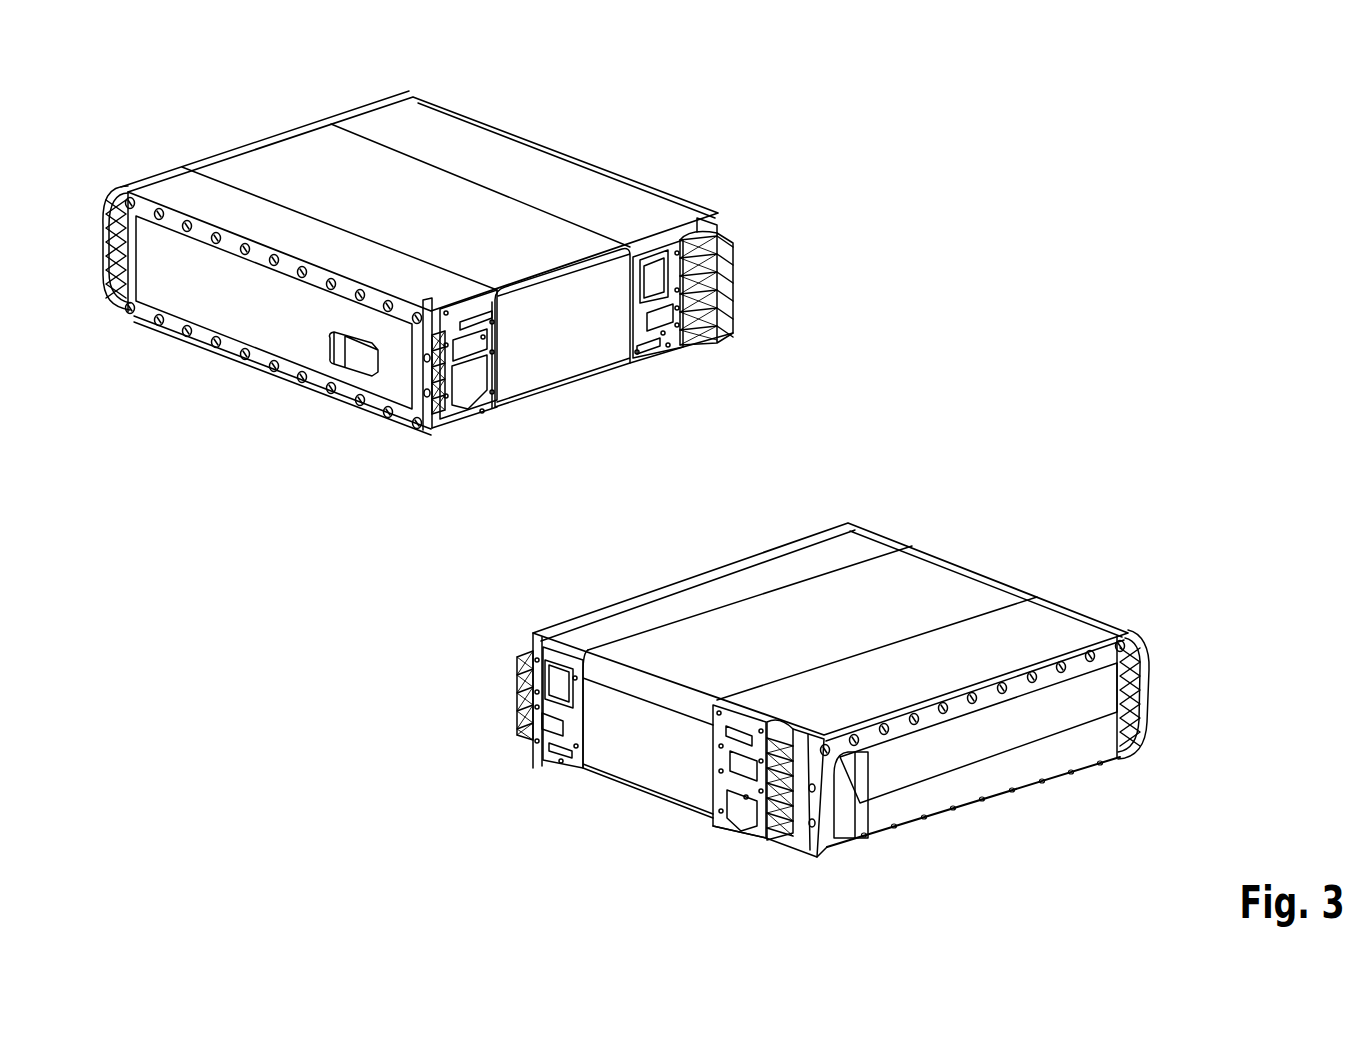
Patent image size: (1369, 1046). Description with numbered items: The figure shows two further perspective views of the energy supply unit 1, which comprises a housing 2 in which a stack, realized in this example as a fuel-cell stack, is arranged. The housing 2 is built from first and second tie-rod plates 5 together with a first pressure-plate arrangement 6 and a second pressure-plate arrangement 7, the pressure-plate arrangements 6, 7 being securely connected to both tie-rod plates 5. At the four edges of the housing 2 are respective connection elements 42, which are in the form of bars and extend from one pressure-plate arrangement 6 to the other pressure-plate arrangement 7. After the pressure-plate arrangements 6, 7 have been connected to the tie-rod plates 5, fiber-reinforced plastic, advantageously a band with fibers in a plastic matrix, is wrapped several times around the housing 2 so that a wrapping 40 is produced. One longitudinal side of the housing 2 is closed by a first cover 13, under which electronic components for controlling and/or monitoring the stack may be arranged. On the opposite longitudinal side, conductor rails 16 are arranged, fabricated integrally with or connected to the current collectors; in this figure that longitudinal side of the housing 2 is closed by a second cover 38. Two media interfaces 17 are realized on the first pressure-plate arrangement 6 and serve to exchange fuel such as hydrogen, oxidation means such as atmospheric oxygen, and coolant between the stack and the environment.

The energy supply unit 1 is at (919, 285).
The housing 2 is at (704, 110).
The tie-rod plates 5 is at (534, 182).
The first pressure-plate arrangement 6 is at (750, 303).
The second pressure-plate arrangement 7 is at (96, 265).
The first cover 13 is at (1007, 780).
The conductor rails 16 is at (352, 357).
The media interfaces 17 is at (671, 340).
The second cover 38 is at (240, 305).
The wrapping 40 is at (577, 360).
The connection elements 42 is at (716, 229).